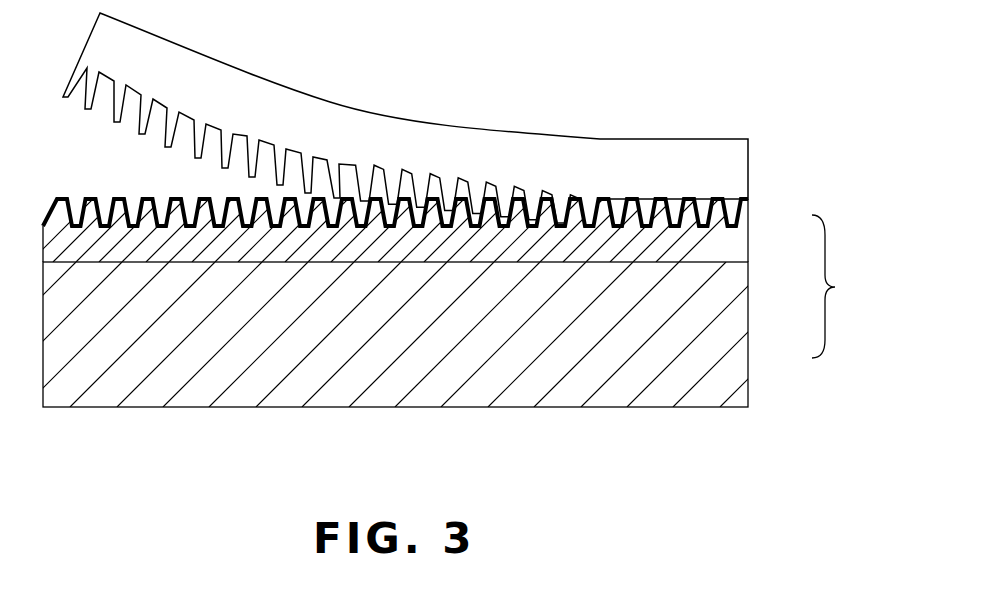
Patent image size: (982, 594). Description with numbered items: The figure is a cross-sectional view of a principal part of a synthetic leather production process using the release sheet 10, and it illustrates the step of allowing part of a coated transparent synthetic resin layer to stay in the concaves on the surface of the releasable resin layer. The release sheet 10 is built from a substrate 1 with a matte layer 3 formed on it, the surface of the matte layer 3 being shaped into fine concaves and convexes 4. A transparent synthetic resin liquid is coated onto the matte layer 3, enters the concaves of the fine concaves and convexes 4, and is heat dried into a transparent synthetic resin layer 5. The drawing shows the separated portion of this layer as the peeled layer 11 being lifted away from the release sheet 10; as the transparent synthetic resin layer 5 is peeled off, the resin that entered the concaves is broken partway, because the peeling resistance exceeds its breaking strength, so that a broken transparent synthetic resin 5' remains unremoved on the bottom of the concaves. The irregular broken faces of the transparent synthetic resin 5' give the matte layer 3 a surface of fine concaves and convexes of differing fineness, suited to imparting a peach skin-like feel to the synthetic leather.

The substrate 1 is at (737, 359).
The matte layer 3 is at (737, 243).
The fine concaves and convexes 4 is at (638, 207).
The transparent synthetic resin layer 5 is at (395, 150).
The transparent synthetic resin 5' is at (95, 181).
The release sheet 10 is at (882, 298).
The peeled layer 11 is at (738, 167).